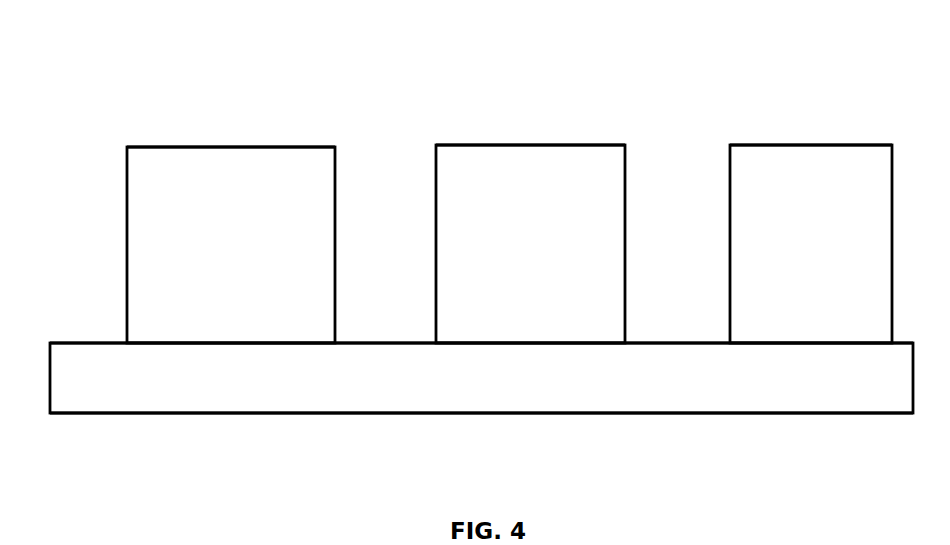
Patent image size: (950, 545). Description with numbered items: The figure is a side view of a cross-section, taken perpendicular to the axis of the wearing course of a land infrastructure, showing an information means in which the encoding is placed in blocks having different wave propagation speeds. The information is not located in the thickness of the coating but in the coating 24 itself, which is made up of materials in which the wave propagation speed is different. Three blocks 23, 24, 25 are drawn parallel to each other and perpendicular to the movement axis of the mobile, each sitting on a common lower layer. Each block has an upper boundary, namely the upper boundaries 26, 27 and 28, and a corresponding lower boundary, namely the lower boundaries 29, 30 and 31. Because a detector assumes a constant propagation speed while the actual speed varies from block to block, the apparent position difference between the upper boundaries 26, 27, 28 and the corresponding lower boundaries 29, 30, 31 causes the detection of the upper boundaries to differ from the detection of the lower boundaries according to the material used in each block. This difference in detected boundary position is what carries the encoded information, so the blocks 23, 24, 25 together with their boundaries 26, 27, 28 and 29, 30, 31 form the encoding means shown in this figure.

The first battery cell 23 is at (165, 196).
The coating 24 is at (475, 200).
The third battery cell 25 is at (752, 187).
The upper boundary 26 is at (238, 146).
The upper boundary 27 is at (565, 145).
The upper boundary 28 is at (840, 143).
The lower boundary 29 is at (215, 345).
The lower boundary 30 is at (520, 345).
The lower boundary 31 is at (826, 345).